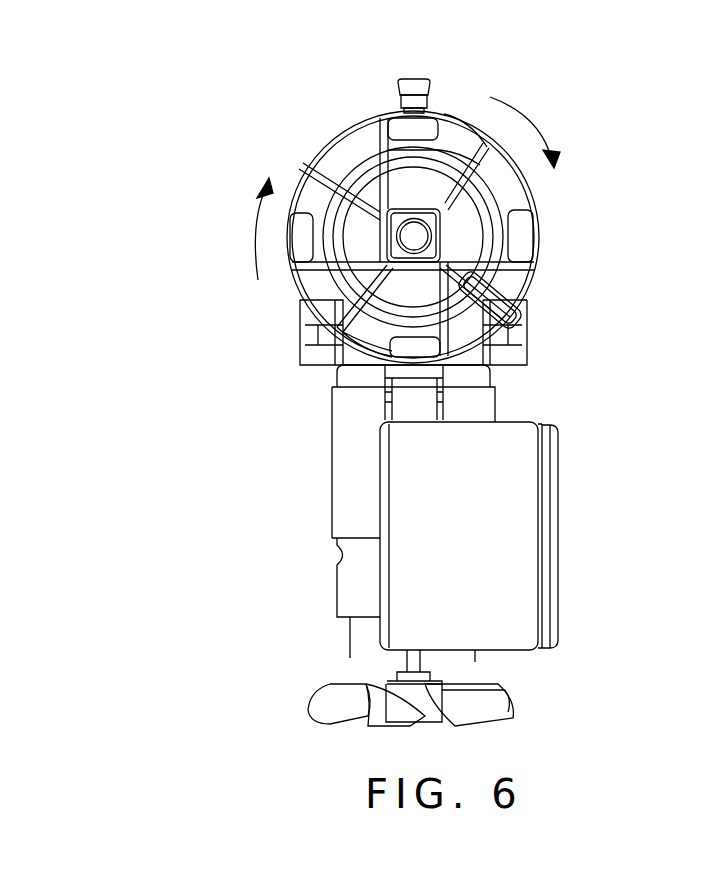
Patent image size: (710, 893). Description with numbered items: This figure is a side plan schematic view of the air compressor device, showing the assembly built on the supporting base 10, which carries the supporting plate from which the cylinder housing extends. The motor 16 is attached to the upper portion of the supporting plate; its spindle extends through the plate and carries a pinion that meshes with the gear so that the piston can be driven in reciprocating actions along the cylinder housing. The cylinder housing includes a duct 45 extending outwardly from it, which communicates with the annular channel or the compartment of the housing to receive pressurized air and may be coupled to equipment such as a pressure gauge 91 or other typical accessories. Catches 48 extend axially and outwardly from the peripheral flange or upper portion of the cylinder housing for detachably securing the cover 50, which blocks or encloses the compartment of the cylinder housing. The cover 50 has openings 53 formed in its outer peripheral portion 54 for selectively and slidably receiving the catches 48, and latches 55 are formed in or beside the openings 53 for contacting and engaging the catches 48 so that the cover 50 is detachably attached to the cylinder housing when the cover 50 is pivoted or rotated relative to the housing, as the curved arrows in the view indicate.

The duct 45 is at (409, 84).
The cover 50 is at (348, 148).
The catches 48 is at (302, 233).
The latches 55 is at (527, 264).
The openings 53 is at (508, 292).
The supporting base 10 is at (512, 358).
The outer peripheral portion 54 is at (290, 290).
The motor 16 is at (350, 500).
The pressure gauge 91 is at (520, 537).